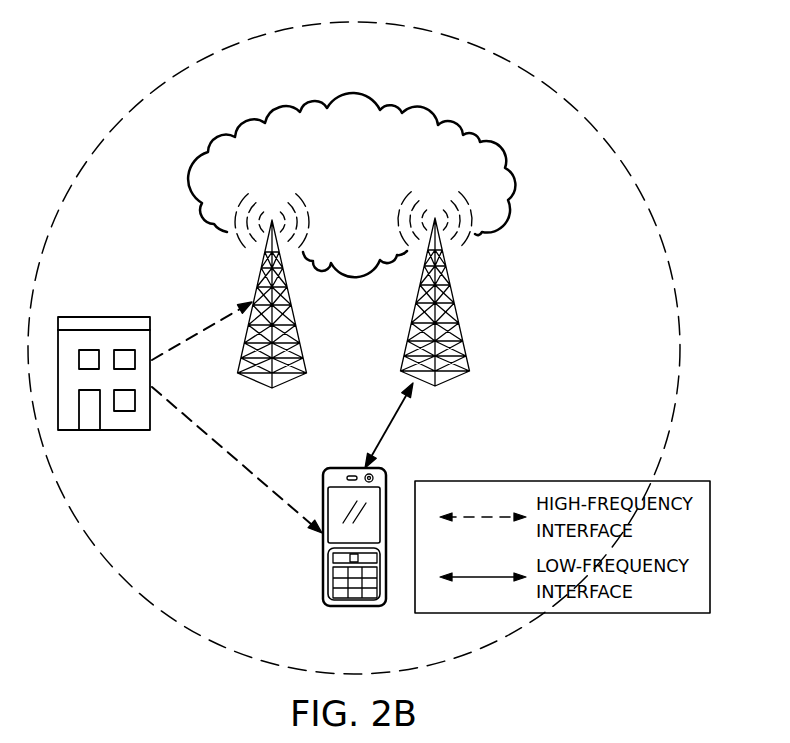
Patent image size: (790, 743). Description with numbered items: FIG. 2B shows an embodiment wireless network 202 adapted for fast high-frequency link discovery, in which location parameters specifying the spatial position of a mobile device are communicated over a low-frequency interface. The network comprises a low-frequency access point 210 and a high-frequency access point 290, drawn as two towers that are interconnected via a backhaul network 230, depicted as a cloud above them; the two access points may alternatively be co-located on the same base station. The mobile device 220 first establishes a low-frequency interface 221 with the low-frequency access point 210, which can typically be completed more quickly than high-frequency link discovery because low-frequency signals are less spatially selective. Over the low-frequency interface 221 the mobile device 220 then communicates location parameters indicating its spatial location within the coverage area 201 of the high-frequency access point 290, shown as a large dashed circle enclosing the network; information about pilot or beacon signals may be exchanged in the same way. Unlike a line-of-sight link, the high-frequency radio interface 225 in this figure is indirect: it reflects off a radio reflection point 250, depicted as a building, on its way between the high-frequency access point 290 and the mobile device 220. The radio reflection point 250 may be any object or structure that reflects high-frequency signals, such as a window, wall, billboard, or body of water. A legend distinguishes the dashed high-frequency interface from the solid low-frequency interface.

The coverage area 201 is at (190, 58).
The wireless network 202 is at (594, 40).
The low-frequency access point 210 is at (455, 386).
The mobile device 220 is at (322, 557).
The low-frequency interface 221 is at (387, 428).
The high-frequency radio interface 225 is at (213, 325).
The backhaul network 230 is at (334, 200).
The radio reflection point 250 is at (104, 431).
The high-frequency access point 290 is at (258, 386).